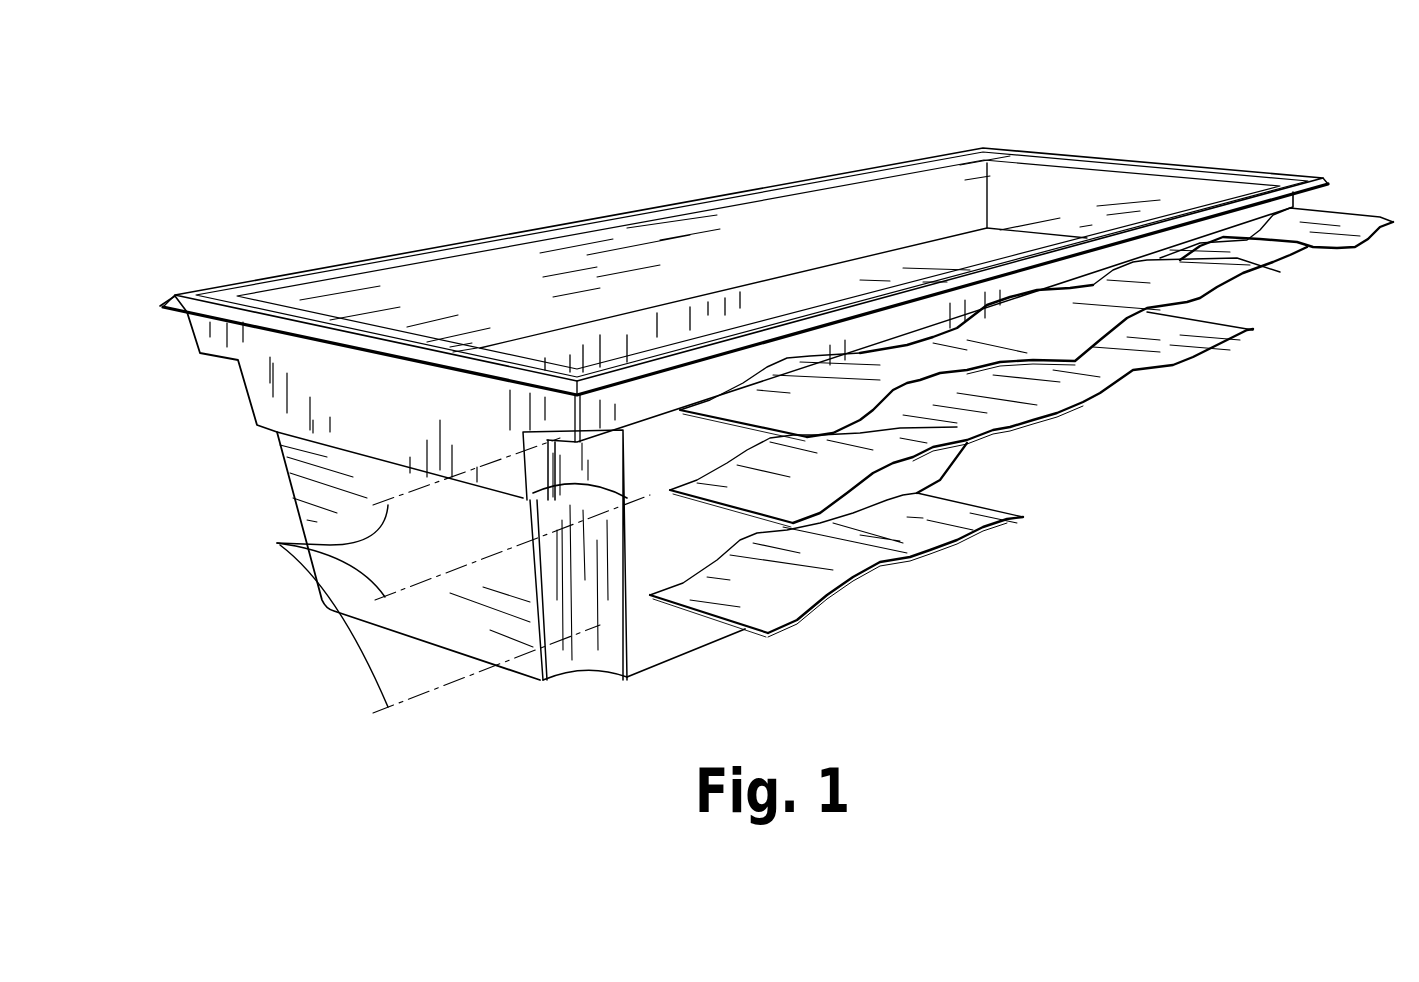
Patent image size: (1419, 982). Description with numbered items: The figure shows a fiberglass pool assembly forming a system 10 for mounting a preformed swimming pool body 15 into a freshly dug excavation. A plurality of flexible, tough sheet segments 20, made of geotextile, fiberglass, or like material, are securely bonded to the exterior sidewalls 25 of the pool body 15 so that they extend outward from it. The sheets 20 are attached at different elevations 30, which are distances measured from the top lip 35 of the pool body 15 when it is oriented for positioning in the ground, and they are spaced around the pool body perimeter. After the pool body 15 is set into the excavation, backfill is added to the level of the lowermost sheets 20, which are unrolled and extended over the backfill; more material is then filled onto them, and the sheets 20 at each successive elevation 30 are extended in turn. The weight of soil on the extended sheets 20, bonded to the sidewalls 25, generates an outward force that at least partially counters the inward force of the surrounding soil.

The system 10 is at (372, 133).
The pool body 15 is at (1100, 153).
The sheet segments 20 is at (1353, 210).
The exterior sidewalls 25 is at (697, 652).
The elevations 30 is at (300, 546).
The top lip 35 is at (164, 303).